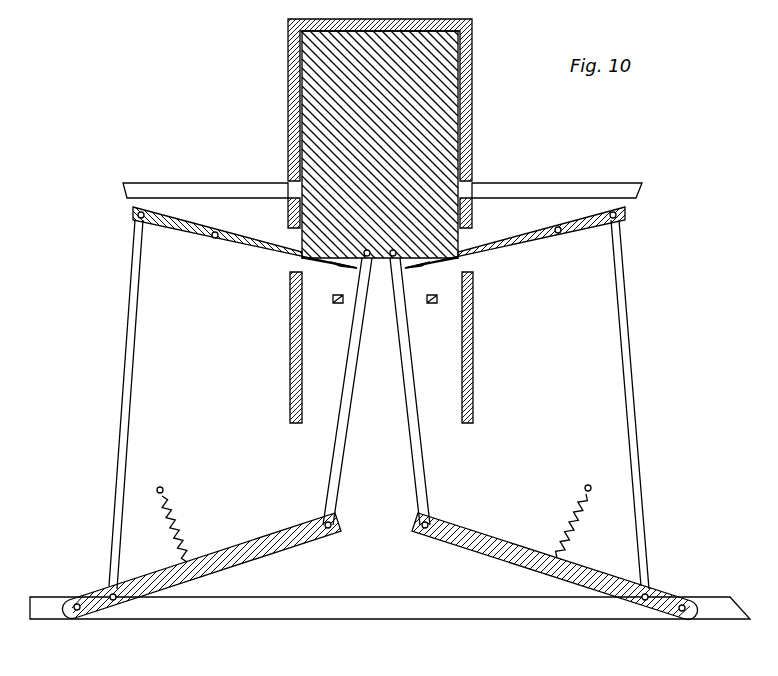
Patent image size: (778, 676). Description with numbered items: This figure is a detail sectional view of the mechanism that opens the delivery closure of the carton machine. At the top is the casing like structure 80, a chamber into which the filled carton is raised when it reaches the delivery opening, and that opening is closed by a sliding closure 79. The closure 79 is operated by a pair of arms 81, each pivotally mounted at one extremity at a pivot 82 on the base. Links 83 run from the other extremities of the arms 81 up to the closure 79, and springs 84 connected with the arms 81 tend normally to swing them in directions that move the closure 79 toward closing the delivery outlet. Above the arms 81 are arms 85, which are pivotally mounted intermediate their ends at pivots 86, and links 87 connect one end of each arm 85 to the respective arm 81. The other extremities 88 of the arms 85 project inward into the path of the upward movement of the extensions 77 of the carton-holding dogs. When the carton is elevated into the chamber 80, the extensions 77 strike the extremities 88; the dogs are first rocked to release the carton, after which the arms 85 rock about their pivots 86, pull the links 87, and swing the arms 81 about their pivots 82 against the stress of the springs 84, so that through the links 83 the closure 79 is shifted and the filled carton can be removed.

The extension of dog 77 is at (336, 304).
The sliding closure 79 is at (448, 124).
The casing like structure 80 is at (288, 102).
The arms 81 is at (265, 535).
The pivot of arms 82 is at (83, 595).
The links 83 is at (415, 460).
The springs 84 is at (182, 522).
The arms 85 is at (266, 250).
The pivot of arms 86 is at (212, 240).
The links 87 is at (122, 382).
The extremities of arms 88 is at (347, 270).